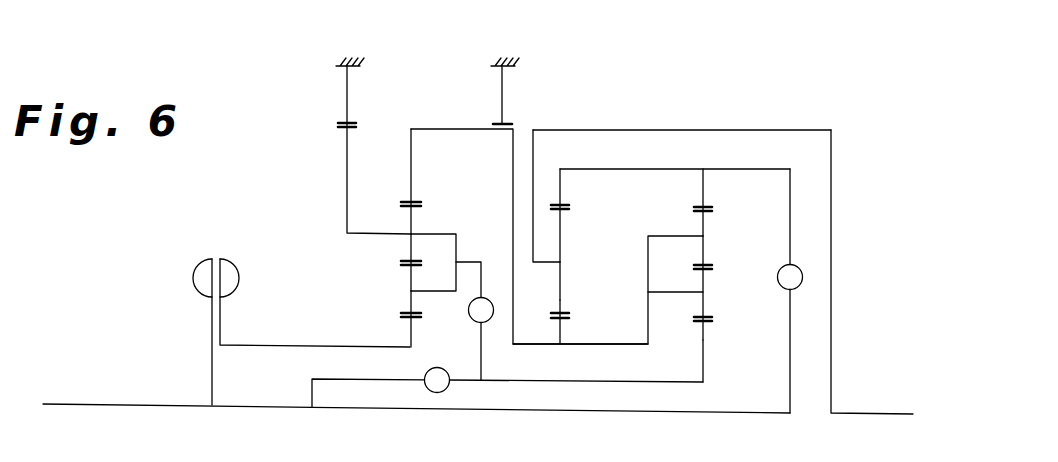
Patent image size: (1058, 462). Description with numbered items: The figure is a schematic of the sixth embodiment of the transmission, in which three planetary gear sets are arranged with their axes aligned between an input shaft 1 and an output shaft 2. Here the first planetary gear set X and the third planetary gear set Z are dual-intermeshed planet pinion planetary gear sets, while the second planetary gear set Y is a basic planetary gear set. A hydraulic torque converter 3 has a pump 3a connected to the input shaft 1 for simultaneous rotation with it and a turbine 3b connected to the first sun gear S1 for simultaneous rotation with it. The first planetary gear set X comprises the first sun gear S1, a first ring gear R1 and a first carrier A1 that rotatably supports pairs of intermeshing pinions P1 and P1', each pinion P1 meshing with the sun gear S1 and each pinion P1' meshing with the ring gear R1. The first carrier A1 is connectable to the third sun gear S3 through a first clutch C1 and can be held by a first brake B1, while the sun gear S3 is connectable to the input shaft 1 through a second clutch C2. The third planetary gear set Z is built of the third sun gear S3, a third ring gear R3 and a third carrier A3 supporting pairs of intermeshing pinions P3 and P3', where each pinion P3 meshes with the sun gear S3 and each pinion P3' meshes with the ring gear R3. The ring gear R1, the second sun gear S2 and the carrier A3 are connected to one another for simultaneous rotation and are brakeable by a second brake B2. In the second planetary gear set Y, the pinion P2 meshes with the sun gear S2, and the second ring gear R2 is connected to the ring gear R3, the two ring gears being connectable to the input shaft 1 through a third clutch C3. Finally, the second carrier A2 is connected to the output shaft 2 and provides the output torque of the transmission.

The input shaft 1 is at (123, 405).
The output shaft 2 is at (858, 413).
The hydraulic torque converter 3 is at (188, 275).
The pump 3a is at (200, 292).
The turbine 3b is at (233, 292).
The first planetary gear set X is at (392, 150).
The second planetary gear set Y is at (538, 332).
The third planetary gear set Z is at (676, 356).
The first brake B1 is at (344, 120).
The second brake B2 is at (508, 120).
The first clutch C1 is at (487, 323).
The second clutch C2 is at (446, 390).
The third clutch C3 is at (803, 276).
The first ring gear R1 is at (411, 183).
The pinion P1 is at (381, 269).
The pinion P1' is at (447, 240).
The first carrier A1 is at (457, 251).
The first sun gear S1 is at (410, 332).
The second ring gear R2 is at (560, 186).
The pinion P2 is at (560, 287).
The second carrier A2 is at (533, 247).
The second sun gear S2 is at (559, 333).
The third ring gear R3 is at (703, 187).
The pinion P3 is at (722, 310).
The pinion P3' is at (707, 259).
The third carrier A3 is at (648, 313).
The third sun gear S3 is at (703, 350).